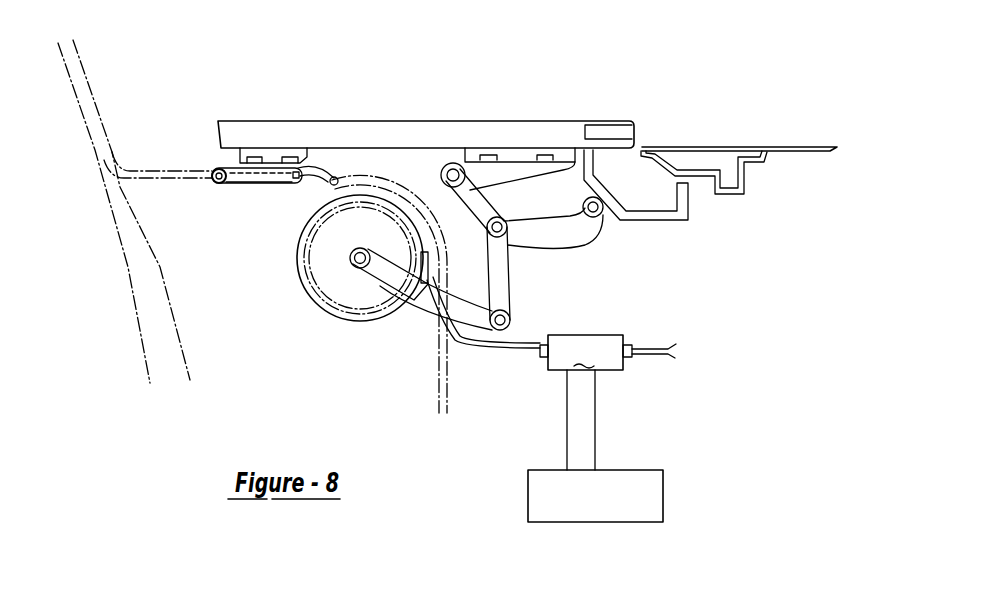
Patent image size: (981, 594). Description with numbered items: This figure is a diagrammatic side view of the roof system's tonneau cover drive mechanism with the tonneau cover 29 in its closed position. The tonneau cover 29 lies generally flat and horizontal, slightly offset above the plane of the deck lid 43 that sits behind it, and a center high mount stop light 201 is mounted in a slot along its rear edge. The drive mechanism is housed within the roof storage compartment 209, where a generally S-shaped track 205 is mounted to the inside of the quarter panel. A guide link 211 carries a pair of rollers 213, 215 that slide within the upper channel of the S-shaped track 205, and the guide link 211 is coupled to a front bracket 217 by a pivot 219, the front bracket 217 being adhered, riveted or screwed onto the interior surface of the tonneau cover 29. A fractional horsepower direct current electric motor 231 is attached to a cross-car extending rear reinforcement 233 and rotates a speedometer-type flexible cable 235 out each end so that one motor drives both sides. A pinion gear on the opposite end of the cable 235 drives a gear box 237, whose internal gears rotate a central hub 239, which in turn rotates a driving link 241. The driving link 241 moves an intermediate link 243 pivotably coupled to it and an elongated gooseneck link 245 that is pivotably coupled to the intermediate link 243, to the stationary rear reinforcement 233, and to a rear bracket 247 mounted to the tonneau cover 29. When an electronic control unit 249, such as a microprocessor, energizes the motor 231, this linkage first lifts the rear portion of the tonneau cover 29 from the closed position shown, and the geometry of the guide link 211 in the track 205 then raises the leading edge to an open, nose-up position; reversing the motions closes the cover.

The tonneau cover 29 is at (413, 128).
The deck lid 43 is at (798, 148).
The center high mount stop light 201 is at (613, 128).
The S-shaped track 205 is at (175, 176).
The roof storage compartment 209 is at (692, 364).
The guide link 211 is at (253, 183).
The roller 213 is at (297, 183).
The roller 215 is at (327, 182).
The front bracket 217 is at (240, 158).
The pivot 219 is at (212, 186).
The electric motor 231 is at (586, 352).
The rear reinforcement 233 is at (688, 200).
The flexible cable 235 is at (648, 349).
The gear box 237 is at (323, 275).
The central hub 239 is at (355, 268).
The driving link 241 is at (376, 298).
The intermediate link 243 is at (502, 277).
The gooseneck link 245 is at (583, 240).
The rear bracket 247 is at (513, 163).
The electronic control unit 249 is at (583, 522).